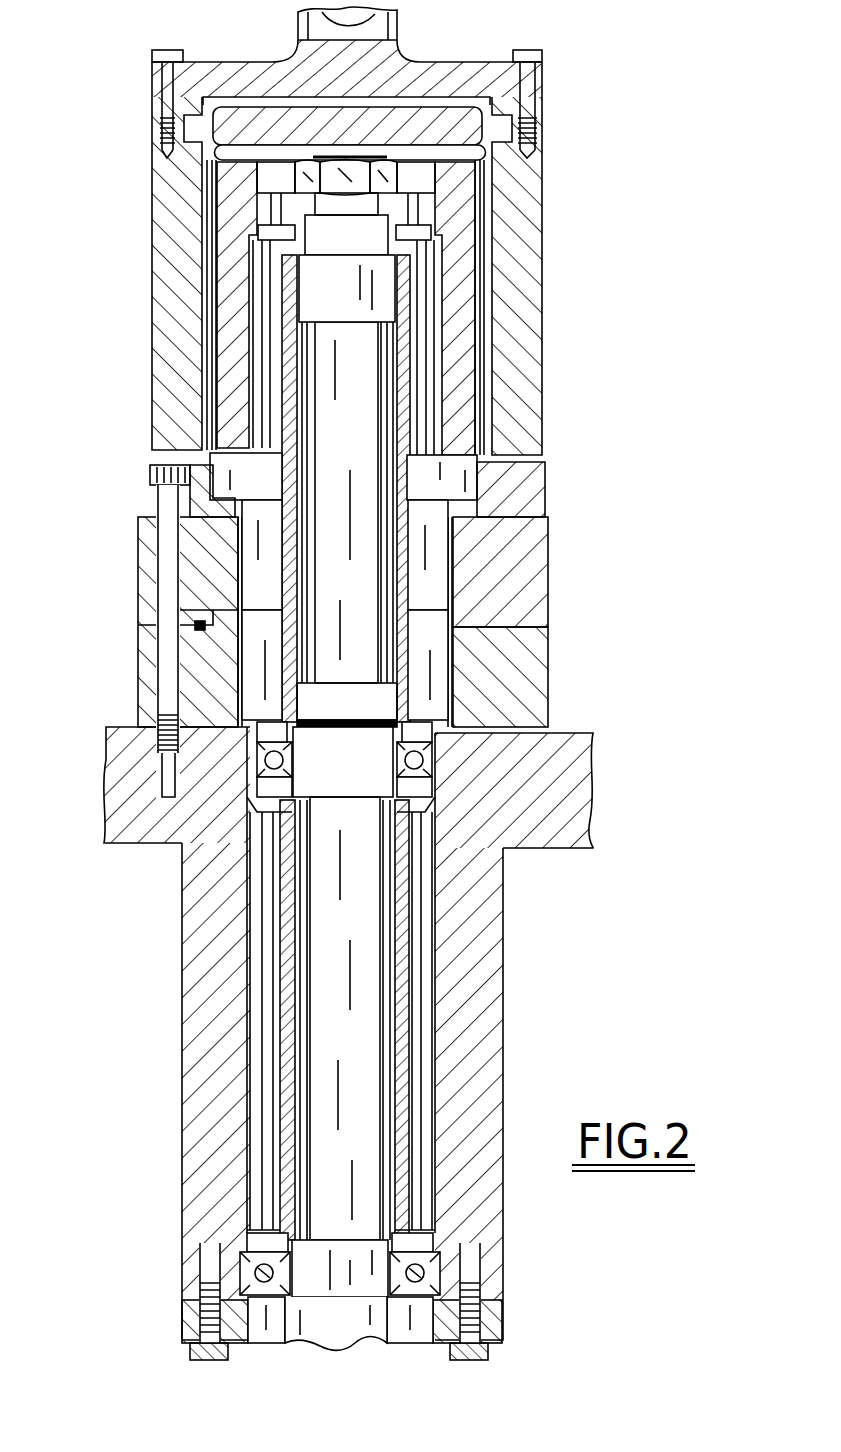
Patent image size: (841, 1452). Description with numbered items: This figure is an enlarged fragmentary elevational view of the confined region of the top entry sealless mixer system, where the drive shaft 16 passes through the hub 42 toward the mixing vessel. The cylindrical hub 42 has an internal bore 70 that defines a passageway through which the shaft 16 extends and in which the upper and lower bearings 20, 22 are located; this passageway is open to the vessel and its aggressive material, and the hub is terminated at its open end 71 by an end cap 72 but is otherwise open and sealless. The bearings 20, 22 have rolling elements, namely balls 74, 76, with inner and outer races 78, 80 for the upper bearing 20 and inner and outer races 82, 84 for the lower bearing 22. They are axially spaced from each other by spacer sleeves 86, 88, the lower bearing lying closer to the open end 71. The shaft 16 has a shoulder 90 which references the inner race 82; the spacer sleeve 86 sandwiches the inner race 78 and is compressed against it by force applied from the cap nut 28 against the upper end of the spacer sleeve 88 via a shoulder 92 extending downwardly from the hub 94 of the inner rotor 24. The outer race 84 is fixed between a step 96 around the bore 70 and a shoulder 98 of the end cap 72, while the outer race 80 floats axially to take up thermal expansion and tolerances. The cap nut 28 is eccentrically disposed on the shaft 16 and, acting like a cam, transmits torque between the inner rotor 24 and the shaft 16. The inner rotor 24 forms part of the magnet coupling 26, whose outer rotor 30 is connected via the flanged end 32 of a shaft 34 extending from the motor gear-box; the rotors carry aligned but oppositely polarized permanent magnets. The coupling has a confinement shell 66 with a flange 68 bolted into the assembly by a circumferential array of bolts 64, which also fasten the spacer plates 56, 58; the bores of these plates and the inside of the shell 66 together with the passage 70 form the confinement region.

The drive shaft 16 is at (378, 423).
The upper bearing 20 is at (430, 766).
The lower bearing 22 is at (440, 1281).
The inner rotor 24 is at (232, 288).
The magnet coupling 26 is at (146, 184).
The cap nut 28 is at (383, 170).
The outer rotor 30 is at (533, 397).
The flanged end 32 is at (247, 28).
The shaft 34 is at (395, 17).
The hub 42 is at (502, 1011).
The spacer plate 56 is at (528, 579).
The spacer plate 58 is at (528, 681).
The bolts 64 is at (170, 571).
The confinement shell 66 is at (487, 345).
The flange 68 is at (538, 501).
The internal bore 70 is at (460, 960).
The open end 71 is at (406, 1345).
The end cap 72 is at (503, 1340).
The balls 74 is at (235, 806).
The balls 76 is at (262, 1271).
The inner race 78 is at (300, 774).
The outer race 80 is at (257, 770).
The inner race 82 is at (415, 1252).
The outer race 84 is at (433, 1283).
The spacer sleeve 86 is at (290, 918).
The spacer sleeve 88 is at (412, 472).
The shoulder 90 is at (308, 1295).
The shoulder 92 is at (390, 262).
The hub 94 is at (270, 204).
The step 96 is at (425, 1258).
The shoulder 98 is at (253, 1343).